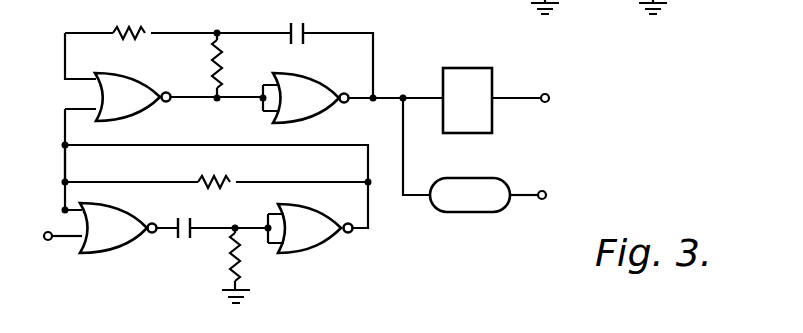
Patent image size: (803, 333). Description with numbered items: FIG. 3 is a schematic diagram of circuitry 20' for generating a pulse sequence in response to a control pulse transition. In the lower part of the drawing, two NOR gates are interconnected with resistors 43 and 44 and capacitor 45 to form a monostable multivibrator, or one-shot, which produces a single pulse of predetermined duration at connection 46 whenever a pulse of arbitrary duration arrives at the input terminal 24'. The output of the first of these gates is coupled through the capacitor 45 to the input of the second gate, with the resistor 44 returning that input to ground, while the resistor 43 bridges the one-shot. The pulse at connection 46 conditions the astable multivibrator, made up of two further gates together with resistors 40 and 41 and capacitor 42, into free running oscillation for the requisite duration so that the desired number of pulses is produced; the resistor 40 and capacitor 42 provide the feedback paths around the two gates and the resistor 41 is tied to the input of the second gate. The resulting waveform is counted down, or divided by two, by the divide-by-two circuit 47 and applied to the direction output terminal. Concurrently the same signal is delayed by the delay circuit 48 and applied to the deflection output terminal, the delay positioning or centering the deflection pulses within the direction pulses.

The resistor 40 is at (138, 8).
The resistor 41 is at (212, 63).
The capacitor 42 is at (296, 22).
The resistor 43 is at (220, 178).
The resistor 44 is at (232, 268).
The capacitor 45 is at (180, 245).
The connection 46 is at (62, 145).
The divide-by-two circuit 47 is at (493, 72).
The delay circuit 48 is at (476, 214).
The input terminal 24' is at (57, 261).
The pulse direction circuit 20' is at (317, 151).